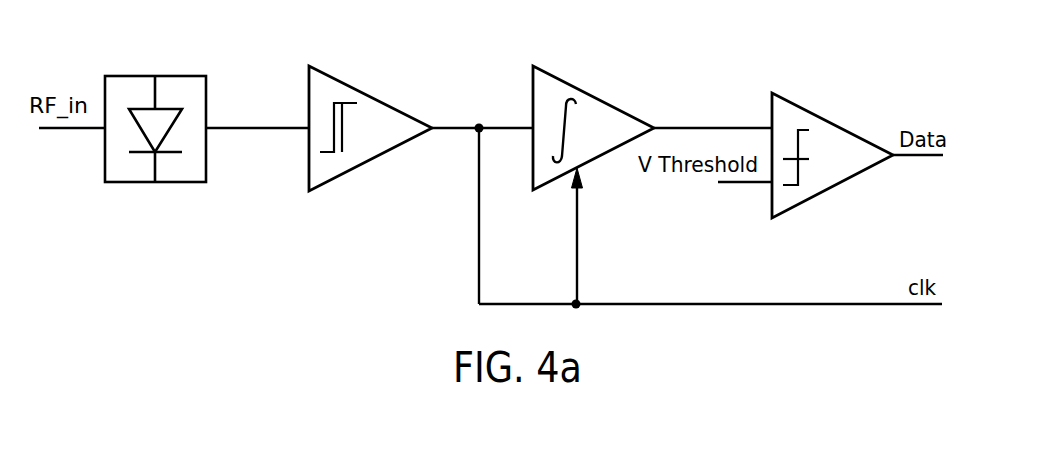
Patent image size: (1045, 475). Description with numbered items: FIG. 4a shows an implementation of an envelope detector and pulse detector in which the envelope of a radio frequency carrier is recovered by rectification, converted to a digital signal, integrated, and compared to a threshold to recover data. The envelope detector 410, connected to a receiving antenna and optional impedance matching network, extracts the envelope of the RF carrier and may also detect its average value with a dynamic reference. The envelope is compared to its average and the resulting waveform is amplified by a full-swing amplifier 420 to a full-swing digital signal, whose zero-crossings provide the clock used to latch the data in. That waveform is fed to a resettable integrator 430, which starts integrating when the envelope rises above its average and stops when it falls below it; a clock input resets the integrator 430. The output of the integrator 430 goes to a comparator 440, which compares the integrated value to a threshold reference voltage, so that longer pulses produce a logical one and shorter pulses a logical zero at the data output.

The envelope detector 410 is at (134, 183).
The full-swing amplifier 420 is at (350, 168).
The resettable integrator 430 is at (616, 106).
The comparator 440 is at (857, 177).